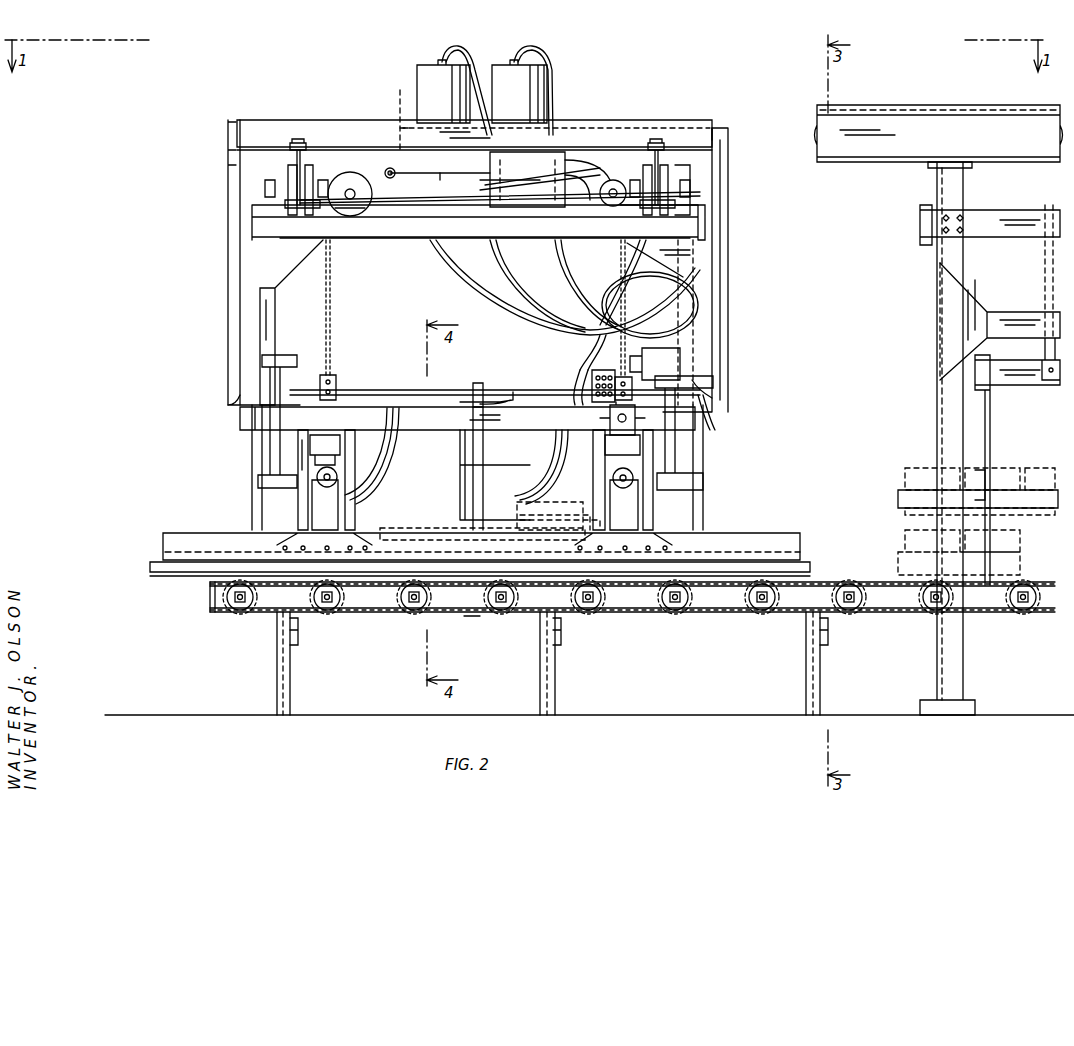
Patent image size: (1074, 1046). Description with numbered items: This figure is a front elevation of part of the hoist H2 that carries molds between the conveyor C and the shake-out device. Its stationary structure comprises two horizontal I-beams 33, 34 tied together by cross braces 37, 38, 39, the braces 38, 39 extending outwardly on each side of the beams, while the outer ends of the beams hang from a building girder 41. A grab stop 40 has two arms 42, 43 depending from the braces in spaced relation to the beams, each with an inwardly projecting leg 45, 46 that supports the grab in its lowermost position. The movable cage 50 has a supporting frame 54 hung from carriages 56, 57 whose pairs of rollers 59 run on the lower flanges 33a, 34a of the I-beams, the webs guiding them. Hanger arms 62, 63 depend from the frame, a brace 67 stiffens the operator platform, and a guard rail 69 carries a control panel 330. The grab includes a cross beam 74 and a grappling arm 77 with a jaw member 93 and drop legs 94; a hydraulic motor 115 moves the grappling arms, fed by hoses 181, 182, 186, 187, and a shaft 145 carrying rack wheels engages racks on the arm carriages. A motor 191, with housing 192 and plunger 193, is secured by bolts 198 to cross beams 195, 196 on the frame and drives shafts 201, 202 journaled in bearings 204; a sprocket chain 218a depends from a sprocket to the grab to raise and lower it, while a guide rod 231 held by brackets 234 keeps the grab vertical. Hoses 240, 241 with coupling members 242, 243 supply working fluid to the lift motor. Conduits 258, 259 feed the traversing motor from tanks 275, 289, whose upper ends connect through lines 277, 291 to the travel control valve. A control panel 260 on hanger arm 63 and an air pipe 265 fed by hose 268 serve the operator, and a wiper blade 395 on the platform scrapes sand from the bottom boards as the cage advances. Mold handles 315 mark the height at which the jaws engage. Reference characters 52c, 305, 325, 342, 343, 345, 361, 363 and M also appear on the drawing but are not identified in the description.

The I-beam 33 is at (305, 155).
The lower flange 33a is at (268, 212).
The I-beam 34 is at (662, 155).
The lower flange 34a is at (668, 212).
The cross brace 37 is at (406, 105).
The cross brace 38 is at (258, 132).
The cross brace 39 is at (345, 132).
The grab stop 40 is at (742, 339).
The girder 41 is at (903, 112).
The arm 42 is at (228, 258).
The arm 43 is at (730, 310).
The flange 45 is at (240, 410).
The flange 46 is at (705, 435).
The cage 50 is at (389, 382).
The support column 52c is at (970, 412).
The supporting frame 54 is at (432, 250).
The carriage 56 is at (283, 175).
The carriage 57 is at (685, 180).
The rollers 59 is at (287, 160).
The hanger arm 62 is at (276, 297).
The hanger arm 63 is at (696, 266).
The brace 67 is at (252, 513).
The guard rail 69 is at (480, 498).
The cross beam 74 is at (458, 422).
The grappling arm 77 is at (368, 520).
The jaw member 93 is at (745, 555).
The drop legs 94 is at (298, 505).
The hydraulic motor 115 is at (322, 498).
The shaft 145 is at (492, 460).
The hose 181 is at (565, 462).
The hose 182 is at (388, 481).
The hose 186 is at (568, 484).
The hose 187 is at (368, 498).
The motor 191 is at (555, 170).
The housing 192 is at (585, 165).
The plunger 193 is at (400, 172).
The cross beam 195 is at (536, 286).
The cross beam 196 is at (587, 285).
The bolts 198 is at (580, 170).
The shaft 201 is at (350, 210).
The shaft 202 is at (615, 170).
The bearings 204 is at (430, 218).
The sprocket chain 218a is at (334, 342).
The guide rod 231 is at (318, 375).
The brackets 234 is at (290, 350).
The hose 240 is at (496, 278).
The hose 241 is at (615, 276).
The coupling member 242 is at (468, 190).
The coupling member 243 is at (570, 160).
The hose 258 is at (527, 179).
The hose 259 is at (445, 172).
The control panel 260 is at (628, 354).
The pipe 265 is at (638, 402).
The air hose 268 is at (715, 430).
The hydraulic reservoir 275 is at (500, 62).
The line 277 is at (550, 62).
The hydraulic reservoir 289 is at (430, 62).
The line 291 is at (470, 55).
The conduit 305 is at (520, 384).
The handles 315 is at (530, 525).
The column 325 is at (925, 189).
The control panel 330 is at (595, 365).
The conveyor rail 342 is at (382, 614).
The conveyor end 343 is at (208, 598).
The leg 345 is at (277, 685).
The sprocket 361 is at (530, 612).
The chain 363 is at (460, 615).
The wiper blade 395 is at (150, 565).
The conveyor C is at (572, 637).
The motor M is at (518, 500).
The hoist H2 is at (732, 120).